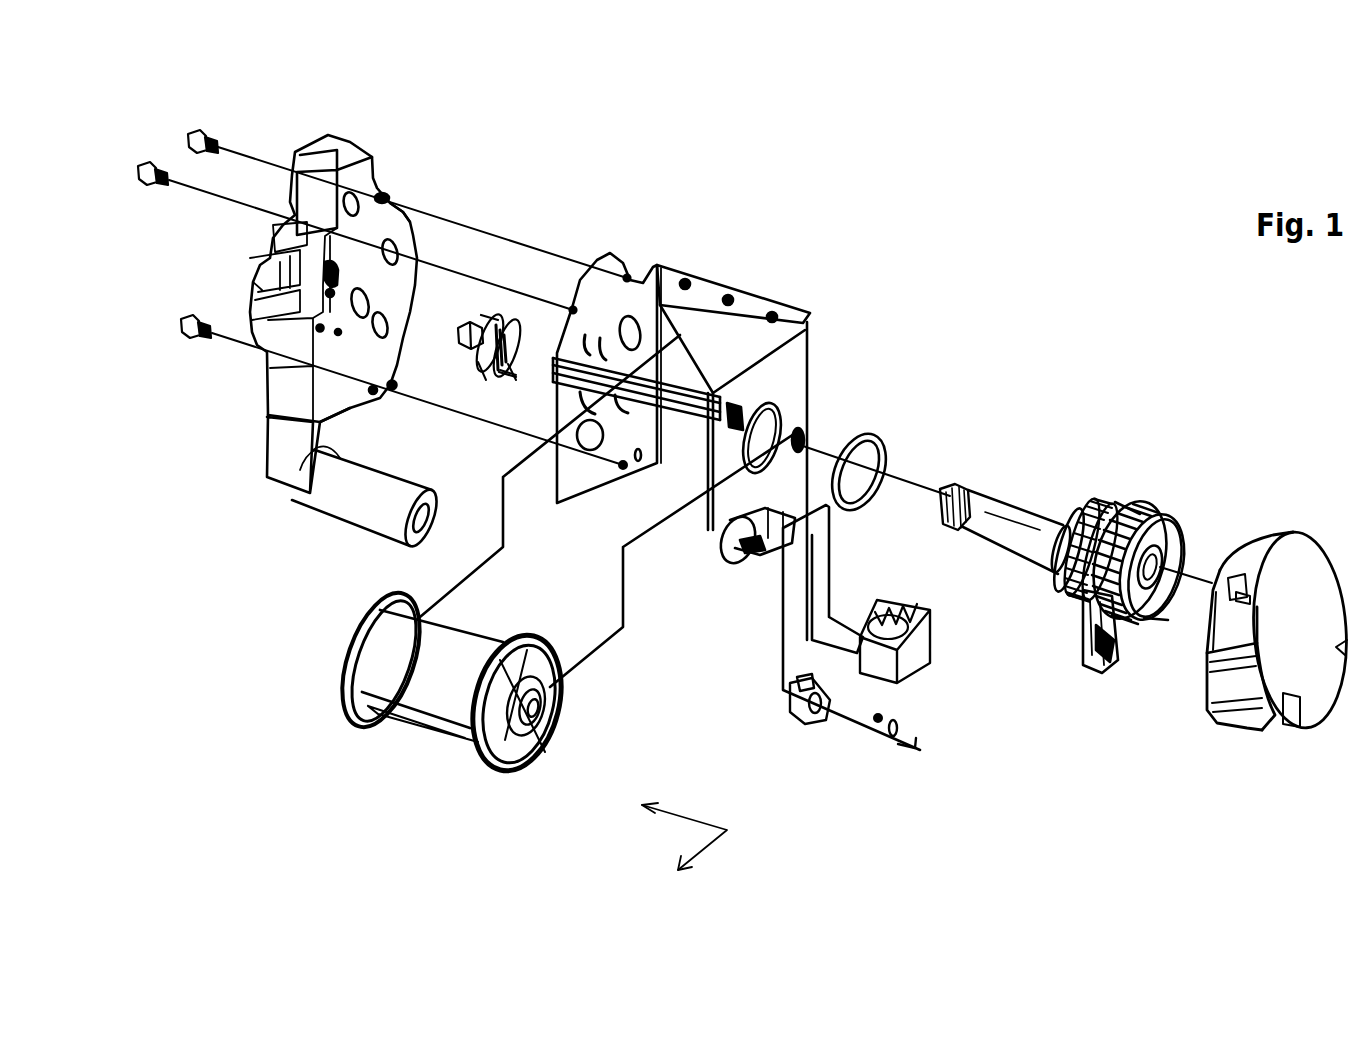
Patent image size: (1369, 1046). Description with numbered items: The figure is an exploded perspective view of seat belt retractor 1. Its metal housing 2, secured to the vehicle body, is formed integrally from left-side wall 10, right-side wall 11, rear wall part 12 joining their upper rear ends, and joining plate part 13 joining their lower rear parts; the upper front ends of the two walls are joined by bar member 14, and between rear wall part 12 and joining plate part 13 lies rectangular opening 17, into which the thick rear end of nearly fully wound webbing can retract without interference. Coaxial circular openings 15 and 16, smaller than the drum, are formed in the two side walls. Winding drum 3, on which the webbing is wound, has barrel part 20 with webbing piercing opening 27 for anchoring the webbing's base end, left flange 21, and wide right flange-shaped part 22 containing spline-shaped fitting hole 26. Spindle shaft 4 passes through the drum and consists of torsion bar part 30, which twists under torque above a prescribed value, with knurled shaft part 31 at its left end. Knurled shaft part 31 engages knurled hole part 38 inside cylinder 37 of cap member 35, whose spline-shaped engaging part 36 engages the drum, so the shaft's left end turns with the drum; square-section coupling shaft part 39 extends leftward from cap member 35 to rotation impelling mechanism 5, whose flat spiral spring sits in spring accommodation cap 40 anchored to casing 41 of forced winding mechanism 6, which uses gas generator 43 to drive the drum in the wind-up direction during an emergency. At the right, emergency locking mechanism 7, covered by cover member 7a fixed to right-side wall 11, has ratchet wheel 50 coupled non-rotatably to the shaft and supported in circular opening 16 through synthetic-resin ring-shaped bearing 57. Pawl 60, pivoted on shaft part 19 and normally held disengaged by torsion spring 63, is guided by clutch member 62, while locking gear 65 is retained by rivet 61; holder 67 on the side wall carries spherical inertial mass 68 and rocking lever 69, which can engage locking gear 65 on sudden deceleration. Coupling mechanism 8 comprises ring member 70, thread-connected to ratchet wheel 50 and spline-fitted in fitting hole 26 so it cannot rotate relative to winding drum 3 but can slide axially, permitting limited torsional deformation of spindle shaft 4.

The seat belt retractor 1 is at (1000, 200).
The housing 2 is at (763, 255).
The winding drum 3 is at (415, 752).
The spindle shaft 4 is at (1010, 497).
The rotation impelling mechanism 5 is at (240, 267).
The forced winding mechanism 6 is at (303, 527).
The emergency locking mechanism 7 is at (1208, 403).
The cover member 7a is at (1340, 560).
The coupling mechanism 8 is at (1075, 483).
The left-side wall 10 is at (562, 490).
The right-side wall 11 is at (793, 378).
The rear wall part 12 is at (700, 285).
The joining plate part 13 is at (683, 463).
The bar member 14 is at (623, 478).
The circular opening 15 is at (630, 322).
The circular opening 16 is at (780, 423).
The rectangular opening 17 is at (733, 340).
The shaft part 19 is at (763, 560).
The barrel part 20 is at (455, 625).
The left flange 21 is at (348, 705).
The right flange-shaped part 22 is at (528, 645).
The fitting hole 26 is at (530, 733).
The webbing piercing opening 27 is at (440, 727).
The torsion bar part 30 is at (990, 530).
The knurled shaft part 31 is at (942, 525).
The cap member 35 is at (517, 310).
The engaging part 36 is at (483, 372).
The cylinder 37 is at (512, 375).
The knurled hole part 38 is at (507, 372).
The coupling shaft part 39 is at (460, 343).
The spring accommodation cap 40 is at (250, 300).
The casing 41 is at (408, 222).
The gas generator 43 is at (370, 530).
The ratchet wheel 50 is at (1080, 605).
The ring-shaped bearing 57 is at (873, 497).
The pawl 60 is at (793, 707).
The rivet 61 is at (1162, 595).
The clutch member 62 is at (1113, 665).
The torsion spring 63 is at (887, 730).
The locking gear 65 is at (1163, 515).
The holder 67 is at (857, 680).
The spherical inertial mass 68 is at (915, 670).
The rocking lever 69 is at (870, 625).
The ring member 70 is at (1062, 590).